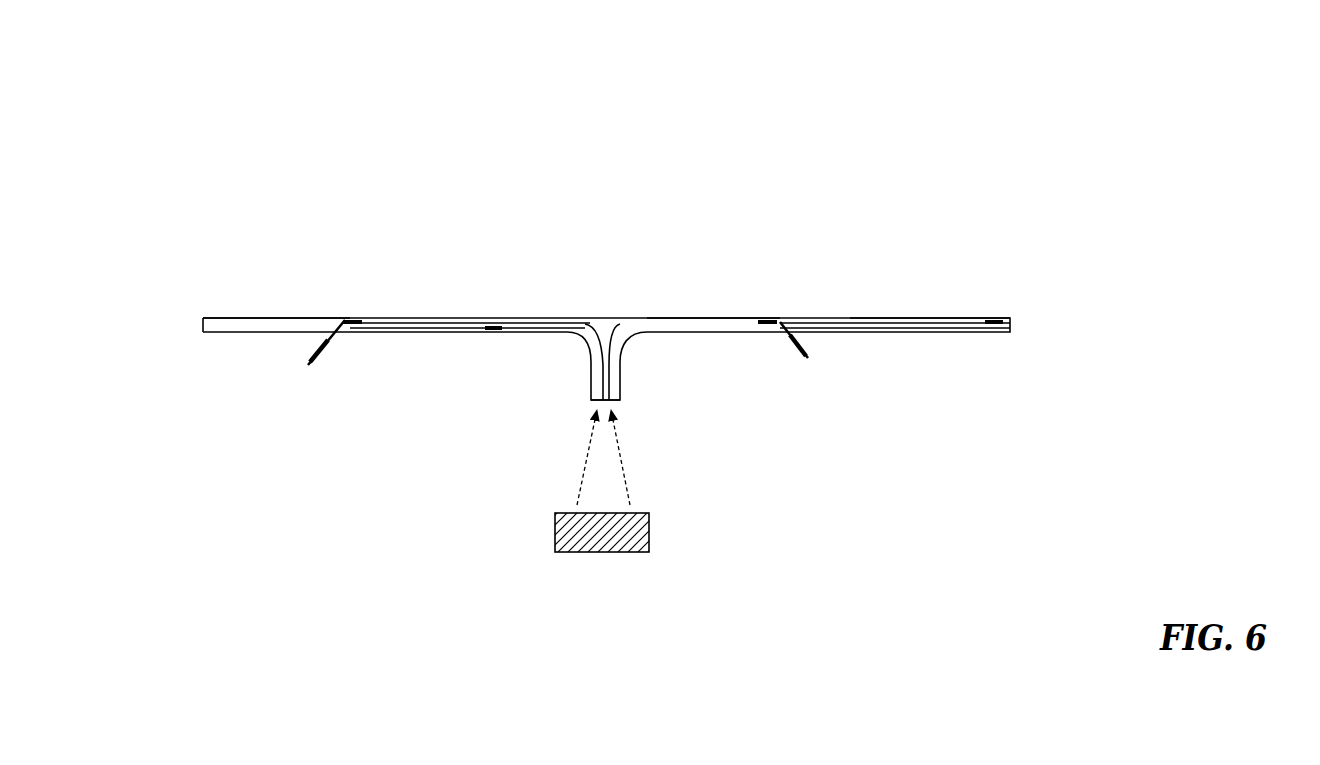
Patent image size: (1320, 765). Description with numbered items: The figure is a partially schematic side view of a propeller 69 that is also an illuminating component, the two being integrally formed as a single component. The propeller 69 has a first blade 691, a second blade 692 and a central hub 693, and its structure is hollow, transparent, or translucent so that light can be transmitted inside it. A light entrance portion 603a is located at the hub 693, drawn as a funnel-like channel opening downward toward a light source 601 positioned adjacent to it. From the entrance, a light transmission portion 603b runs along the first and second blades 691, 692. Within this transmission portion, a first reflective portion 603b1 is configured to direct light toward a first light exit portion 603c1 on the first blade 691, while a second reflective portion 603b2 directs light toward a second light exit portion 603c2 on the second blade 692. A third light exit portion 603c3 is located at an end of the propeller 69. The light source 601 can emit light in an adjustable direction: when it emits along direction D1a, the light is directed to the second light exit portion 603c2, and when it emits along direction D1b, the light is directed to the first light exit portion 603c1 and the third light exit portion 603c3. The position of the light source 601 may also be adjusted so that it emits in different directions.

The propeller 69 is at (953, 315).
The first blade 691 is at (905, 313).
The second blade 692 is at (243, 315).
The hub 693 is at (597, 312).
The light entrance portion 603a is at (629, 403).
The light transmission portion 603b is at (684, 310).
The first reflective portion 603b1 is at (777, 310).
The second reflective portion 603b2 is at (351, 315).
The first light exit portion 603c1 is at (778, 343).
The second light exit portion 603c2 is at (349, 339).
The third light exit portion 603c3 is at (1003, 307).
The light source 601 is at (640, 528).
The direction D1a is at (639, 457).
The direction D1b is at (567, 457).